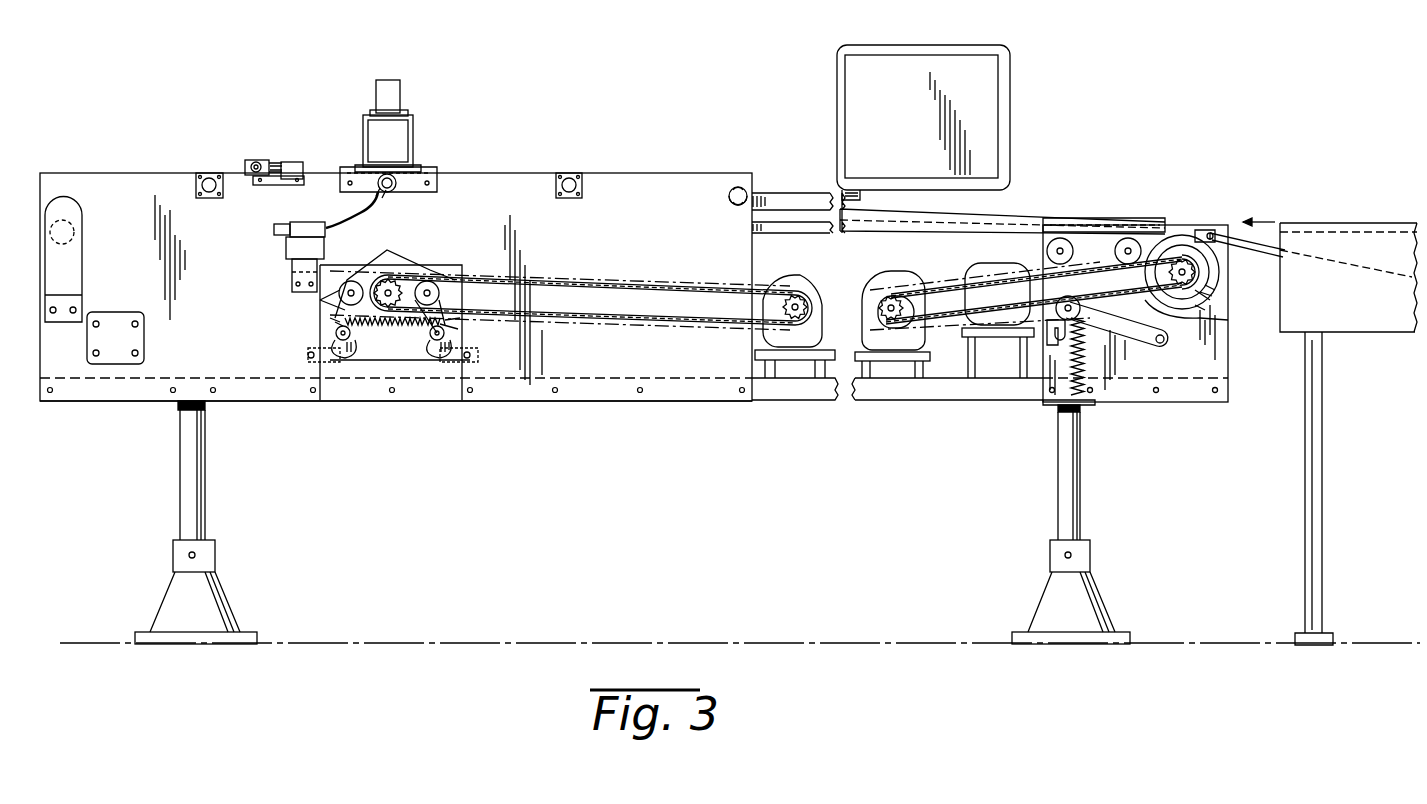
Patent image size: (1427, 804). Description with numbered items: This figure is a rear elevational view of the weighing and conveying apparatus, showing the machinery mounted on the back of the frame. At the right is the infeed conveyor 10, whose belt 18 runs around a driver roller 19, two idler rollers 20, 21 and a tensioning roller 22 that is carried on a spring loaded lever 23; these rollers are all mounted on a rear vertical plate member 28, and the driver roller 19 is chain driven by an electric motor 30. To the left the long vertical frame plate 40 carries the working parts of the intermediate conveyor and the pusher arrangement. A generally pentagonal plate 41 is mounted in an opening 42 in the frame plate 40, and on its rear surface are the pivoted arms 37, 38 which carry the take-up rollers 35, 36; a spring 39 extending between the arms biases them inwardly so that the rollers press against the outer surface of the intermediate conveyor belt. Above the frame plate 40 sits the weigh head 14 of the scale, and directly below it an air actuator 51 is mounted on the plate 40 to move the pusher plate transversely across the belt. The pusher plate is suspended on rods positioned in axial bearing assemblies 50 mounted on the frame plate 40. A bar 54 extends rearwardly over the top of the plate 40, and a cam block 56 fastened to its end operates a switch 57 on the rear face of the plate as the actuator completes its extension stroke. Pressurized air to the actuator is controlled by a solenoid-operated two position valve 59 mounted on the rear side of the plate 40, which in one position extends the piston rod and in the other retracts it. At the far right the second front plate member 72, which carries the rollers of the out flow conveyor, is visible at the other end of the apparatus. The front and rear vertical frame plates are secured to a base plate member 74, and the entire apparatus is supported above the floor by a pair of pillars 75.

The infeed conveyor 10 is at (1182, 218).
The weigh head 14 is at (420, 98).
The belt 18 is at (1200, 230).
The driver roller 19 is at (1210, 300).
The idler roller 20 is at (1060, 238).
The idler roller 21 is at (1130, 238).
The tensioning roller 22 is at (1070, 296).
The spring loaded lever 23 is at (1122, 328).
The rear vertical plate member 28 is at (1190, 392).
The electric motor 30 is at (868, 292).
The take-up roller 35 is at (440, 335).
The take-up roller 36 is at (335, 365).
The pivoted arm 37 is at (455, 330).
The pivoted arm 38 is at (345, 312).
The spring 39 is at (383, 330).
The vertical frame plate 40 is at (640, 183).
The generally pentagonal plate 41 is at (393, 350).
The opening 42 is at (347, 266).
The axial bearing assembly 50 is at (205, 180).
The air actuator 51 is at (358, 167).
The bar 54 is at (300, 180).
The cam block 56 is at (290, 160).
The switch 57 is at (255, 160).
The solenoid-operated two position valve 59 is at (302, 222).
The second front plate member 72 is at (1215, 240).
The base plate member 74 is at (862, 395).
The pillar 75 is at (183, 490).